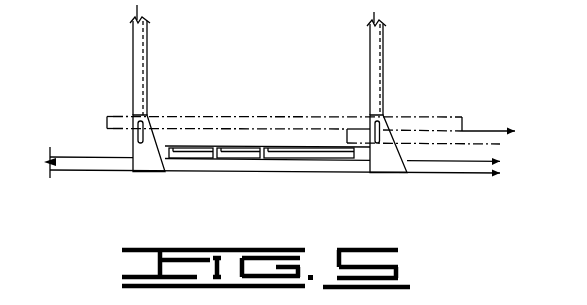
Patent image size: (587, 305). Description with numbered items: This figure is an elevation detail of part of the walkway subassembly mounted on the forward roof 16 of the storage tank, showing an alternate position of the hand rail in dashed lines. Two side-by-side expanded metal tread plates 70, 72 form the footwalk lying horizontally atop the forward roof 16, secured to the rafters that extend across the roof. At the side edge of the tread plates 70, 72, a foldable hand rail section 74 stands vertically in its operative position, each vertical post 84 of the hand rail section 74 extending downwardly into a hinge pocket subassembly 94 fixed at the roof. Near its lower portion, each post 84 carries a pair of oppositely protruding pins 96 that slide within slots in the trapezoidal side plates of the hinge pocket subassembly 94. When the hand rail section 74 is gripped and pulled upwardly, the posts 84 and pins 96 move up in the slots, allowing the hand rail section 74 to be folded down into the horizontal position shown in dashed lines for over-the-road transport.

The forward roof 16 is at (80, 155).
The tread plate 70 is at (320, 149).
The tread plate 72 is at (213, 149).
The hand rail section 74 is at (229, 108).
The vertical post 84 is at (140, 53).
The hinge pocket subassembly 94 is at (142, 184).
The pin 96 is at (133, 115).